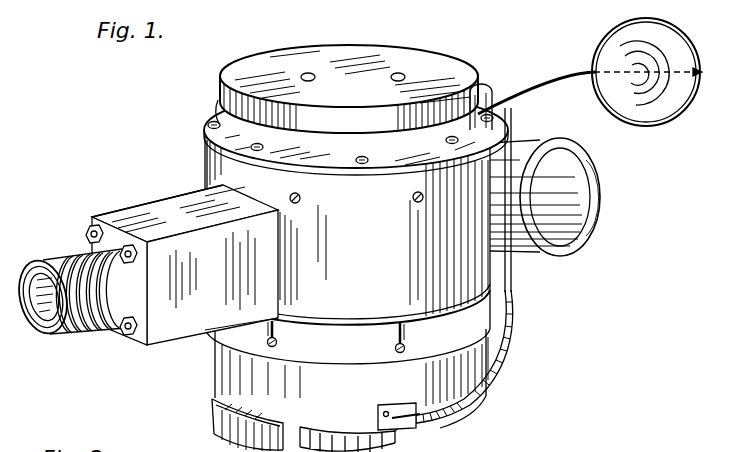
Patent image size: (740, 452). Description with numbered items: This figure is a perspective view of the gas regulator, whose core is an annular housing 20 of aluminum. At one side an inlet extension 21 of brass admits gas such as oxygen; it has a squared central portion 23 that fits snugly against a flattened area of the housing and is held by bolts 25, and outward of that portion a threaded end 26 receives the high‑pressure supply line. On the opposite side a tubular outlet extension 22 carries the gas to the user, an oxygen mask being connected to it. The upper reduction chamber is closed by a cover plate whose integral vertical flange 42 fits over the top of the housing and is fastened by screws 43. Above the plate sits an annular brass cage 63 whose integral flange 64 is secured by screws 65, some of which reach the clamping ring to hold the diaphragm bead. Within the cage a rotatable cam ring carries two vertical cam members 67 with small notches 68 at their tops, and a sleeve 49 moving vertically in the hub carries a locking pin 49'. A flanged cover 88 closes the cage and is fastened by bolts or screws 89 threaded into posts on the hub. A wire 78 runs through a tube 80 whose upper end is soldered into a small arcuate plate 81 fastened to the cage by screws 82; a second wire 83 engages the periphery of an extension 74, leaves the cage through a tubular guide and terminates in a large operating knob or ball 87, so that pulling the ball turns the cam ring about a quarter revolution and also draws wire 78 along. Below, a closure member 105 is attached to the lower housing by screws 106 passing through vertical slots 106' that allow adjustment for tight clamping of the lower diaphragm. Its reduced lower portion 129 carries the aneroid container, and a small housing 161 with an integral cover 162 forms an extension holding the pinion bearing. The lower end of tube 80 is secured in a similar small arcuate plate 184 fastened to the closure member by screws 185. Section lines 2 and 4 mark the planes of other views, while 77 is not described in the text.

The annular housing 20 is at (478, 280).
The inlet extension 21 is at (142, 205).
The tubular outlet extension 22 is at (604, 226).
The squared central portion 23 is at (170, 205).
The bolts 25 is at (90, 230).
The threaded end 26 is at (80, 325).
The vertical flange 42 is at (204, 150).
The screws 43 is at (297, 203).
The annular cage 63 is at (323, 142).
The integral flange 64 is at (217, 108).
The screws 65 is at (210, 122).
The tube 80 is at (512, 338).
The small arcuate plate 81 is at (483, 86).
The screws 82 is at (488, 92).
The second wire 83 is at (571, 81).
The operating knob or ball 87 is at (672, 105).
The flanged cover 88 is at (440, 52).
The bolts or screws 89 is at (308, 73).
The closure member 105 is at (207, 340).
The screws 106 is at (336, 342).
The vertical slots 106' is at (345, 336).
The reduced lower portion 129 is at (228, 383).
The small housing 161 is at (216, 421).
The integral cover 162 is at (212, 408).
The small arcuate plate 184 is at (379, 418).
The screws 185 is at (402, 392).
The section line 2 is at (598, 188).
The section line 4 is at (353, 77).
The part 77 is at (266, 448).
The extension 74 is at (296, 448).
The wire 78 is at (359, 448).
The sleeve 49 is at (436, 448).
The small notches 68 is at (464, 444).
The vertical cam members 67 is at (486, 444).
The locking pin 49' is at (510, 445).